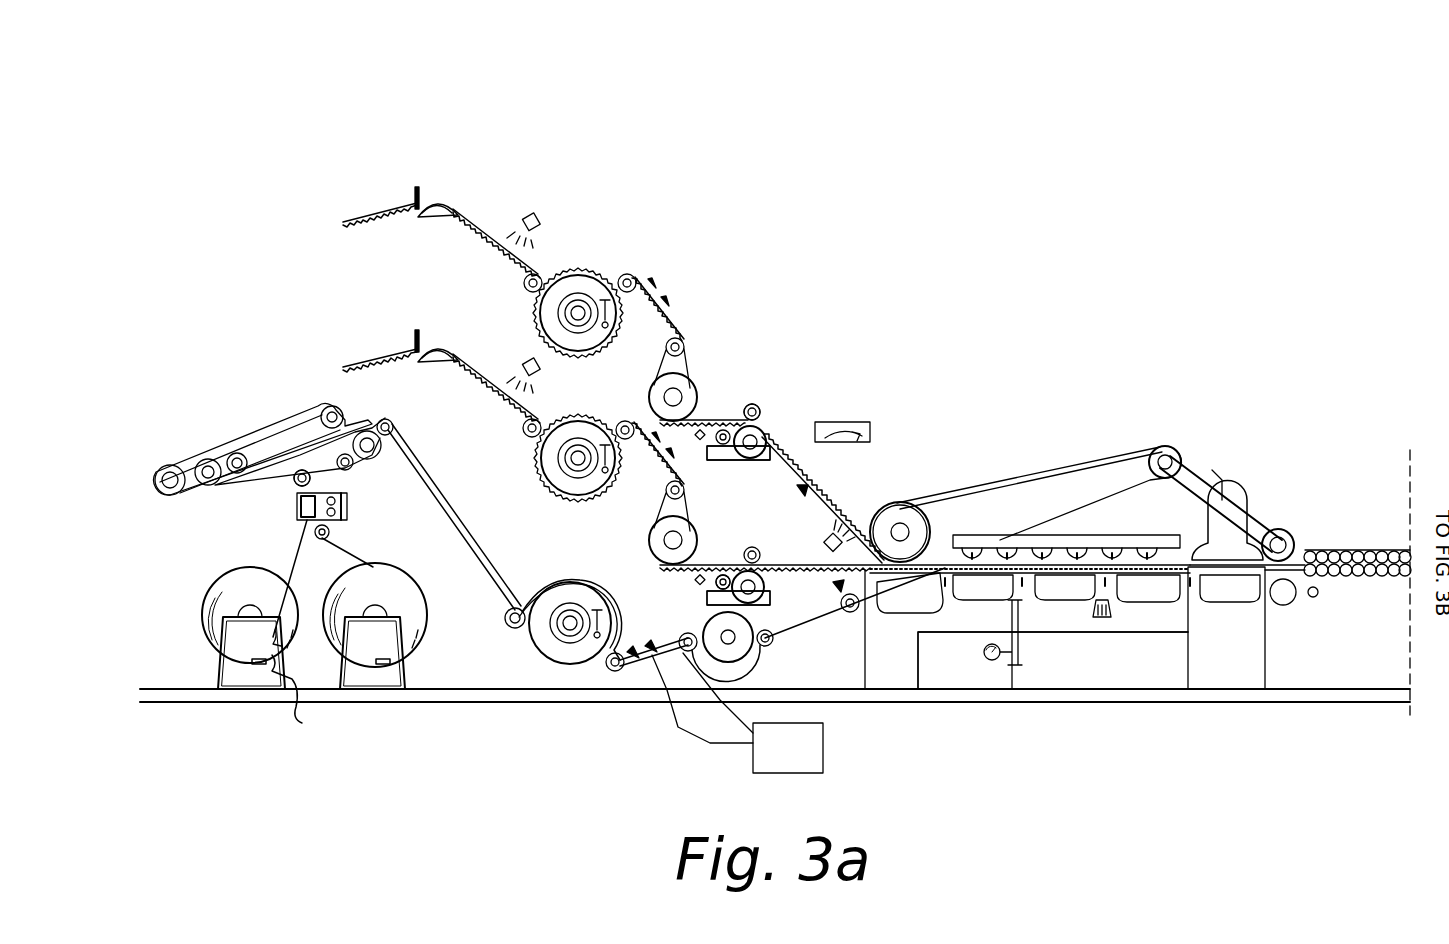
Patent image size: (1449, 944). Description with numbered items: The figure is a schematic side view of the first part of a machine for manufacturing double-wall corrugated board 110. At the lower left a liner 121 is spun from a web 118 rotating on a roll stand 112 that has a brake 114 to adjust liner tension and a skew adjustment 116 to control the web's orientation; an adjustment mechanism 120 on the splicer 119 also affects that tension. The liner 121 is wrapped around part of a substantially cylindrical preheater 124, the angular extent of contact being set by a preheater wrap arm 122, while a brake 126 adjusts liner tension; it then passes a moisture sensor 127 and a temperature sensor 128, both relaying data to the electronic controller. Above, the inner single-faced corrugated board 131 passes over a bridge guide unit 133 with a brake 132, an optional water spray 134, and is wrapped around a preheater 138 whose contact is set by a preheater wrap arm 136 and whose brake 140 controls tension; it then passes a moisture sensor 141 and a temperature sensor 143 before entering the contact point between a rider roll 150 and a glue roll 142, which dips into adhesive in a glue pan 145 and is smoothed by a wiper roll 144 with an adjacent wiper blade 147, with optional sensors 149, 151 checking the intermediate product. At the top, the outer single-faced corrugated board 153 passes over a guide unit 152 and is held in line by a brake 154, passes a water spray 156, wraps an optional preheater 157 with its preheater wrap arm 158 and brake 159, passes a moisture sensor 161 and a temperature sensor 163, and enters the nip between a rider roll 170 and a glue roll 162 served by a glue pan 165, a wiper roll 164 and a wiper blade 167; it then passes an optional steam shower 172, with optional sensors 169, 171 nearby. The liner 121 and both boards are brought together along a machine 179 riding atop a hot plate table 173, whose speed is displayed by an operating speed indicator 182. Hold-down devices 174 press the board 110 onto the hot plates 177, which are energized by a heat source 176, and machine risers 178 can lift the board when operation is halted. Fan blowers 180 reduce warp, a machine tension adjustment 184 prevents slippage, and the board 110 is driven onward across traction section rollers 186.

The double-wall corrugated board 110 is at (1177, 562).
The roll stand 112 is at (236, 663).
The brake 114 is at (278, 632).
The skew adjustment 116 is at (300, 702).
The web 118 is at (207, 611).
The splicer 119 is at (296, 508).
The adjustment mechanism 120 is at (350, 515).
The liner 121 is at (415, 437).
The preheater wrap arm 122 is at (512, 608).
The preheater 124 is at (541, 651).
The brake 126 is at (598, 606).
The moisture sensor 127 is at (630, 668).
The temperature sensor 128 is at (692, 658).
The inner single-faced corrugated board 131 is at (356, 370).
The brake 132 is at (406, 332).
The bridge guide unit 133 is at (444, 344).
The water spray 134 is at (526, 366).
The preheater wrap arm 136 is at (524, 436).
The preheater 138 is at (571, 430).
The brake 140 is at (602, 434).
The moisture sensor 141 is at (628, 481).
The glue roll 142 is at (768, 592).
The temperature sensor 143 is at (660, 468).
The wiper roll 144 is at (714, 576).
The glue pan 145 is at (710, 602).
The wiper blade 147 is at (696, 584).
The sensor 149 is at (731, 546).
The rider roll 150 is at (758, 546).
The sensor 151 is at (838, 608).
The folding plow 152 is at (448, 205).
The outer single-faced corrugated board 153 is at (370, 219).
The brake 154 is at (419, 186).
The water spray 156 is at (538, 212).
The preheater 157 is at (585, 300).
The preheater wrap arm 158 is at (540, 280).
The brake 159 is at (631, 270).
The moisture sensor 161 is at (660, 276).
The glue roll 162 is at (750, 458).
The temperature sensor 163 is at (667, 306).
The wiper roll 164 is at (744, 426).
The glue pan 165 is at (708, 462).
The wiper blade 167 is at (702, 412).
The sensor 169 is at (752, 404).
The rider roll 170 is at (758, 404).
The sensor 171 is at (808, 496).
The steam shower 172 is at (818, 511).
The hot plate table 173 is at (873, 671).
The hold-down devices 174 is at (1012, 536).
The heat source 176 is at (1019, 695).
The hot plates 177 is at (974, 601).
The machine risers 178 is at (1022, 602).
The machine 179 is at (1062, 456).
The fan blowers 180 is at (1104, 620).
The operating speed indicator 182 is at (848, 418).
The machine tension adjustment 184 is at (1258, 522).
The traction section rollers 186 is at (1354, 550).